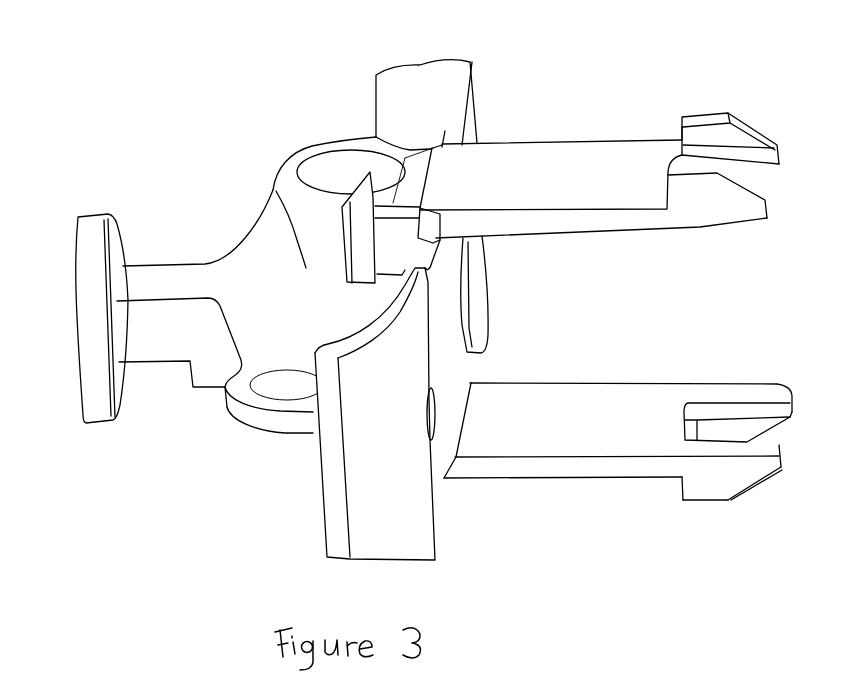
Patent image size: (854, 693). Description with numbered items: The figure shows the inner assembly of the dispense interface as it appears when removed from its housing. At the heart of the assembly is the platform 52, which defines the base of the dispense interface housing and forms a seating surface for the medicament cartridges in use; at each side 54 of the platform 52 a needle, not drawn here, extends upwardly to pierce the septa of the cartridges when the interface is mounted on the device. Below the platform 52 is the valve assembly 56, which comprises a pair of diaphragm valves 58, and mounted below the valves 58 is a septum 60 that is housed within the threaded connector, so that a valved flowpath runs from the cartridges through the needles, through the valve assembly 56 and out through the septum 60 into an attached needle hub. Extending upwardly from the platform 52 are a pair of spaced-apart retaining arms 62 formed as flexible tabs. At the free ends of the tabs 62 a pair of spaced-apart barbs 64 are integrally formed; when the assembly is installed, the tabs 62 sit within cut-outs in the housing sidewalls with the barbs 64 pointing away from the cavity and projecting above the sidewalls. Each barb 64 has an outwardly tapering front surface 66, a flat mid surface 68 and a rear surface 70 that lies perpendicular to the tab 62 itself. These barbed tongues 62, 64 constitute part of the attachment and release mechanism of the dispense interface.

The platform 52 is at (440, 518).
The side of the platform 54 is at (433, 423).
The valve assembly 56 is at (276, 190).
The diaphragm valve 58 is at (348, 163).
The septum 60 is at (75, 315).
The retaining arm 62 is at (540, 150).
The barb 64 is at (781, 157).
The outwardly tapering front surface 66 is at (748, 124).
The flat mid surface 68 is at (702, 115).
The rear surface 70 is at (682, 127).